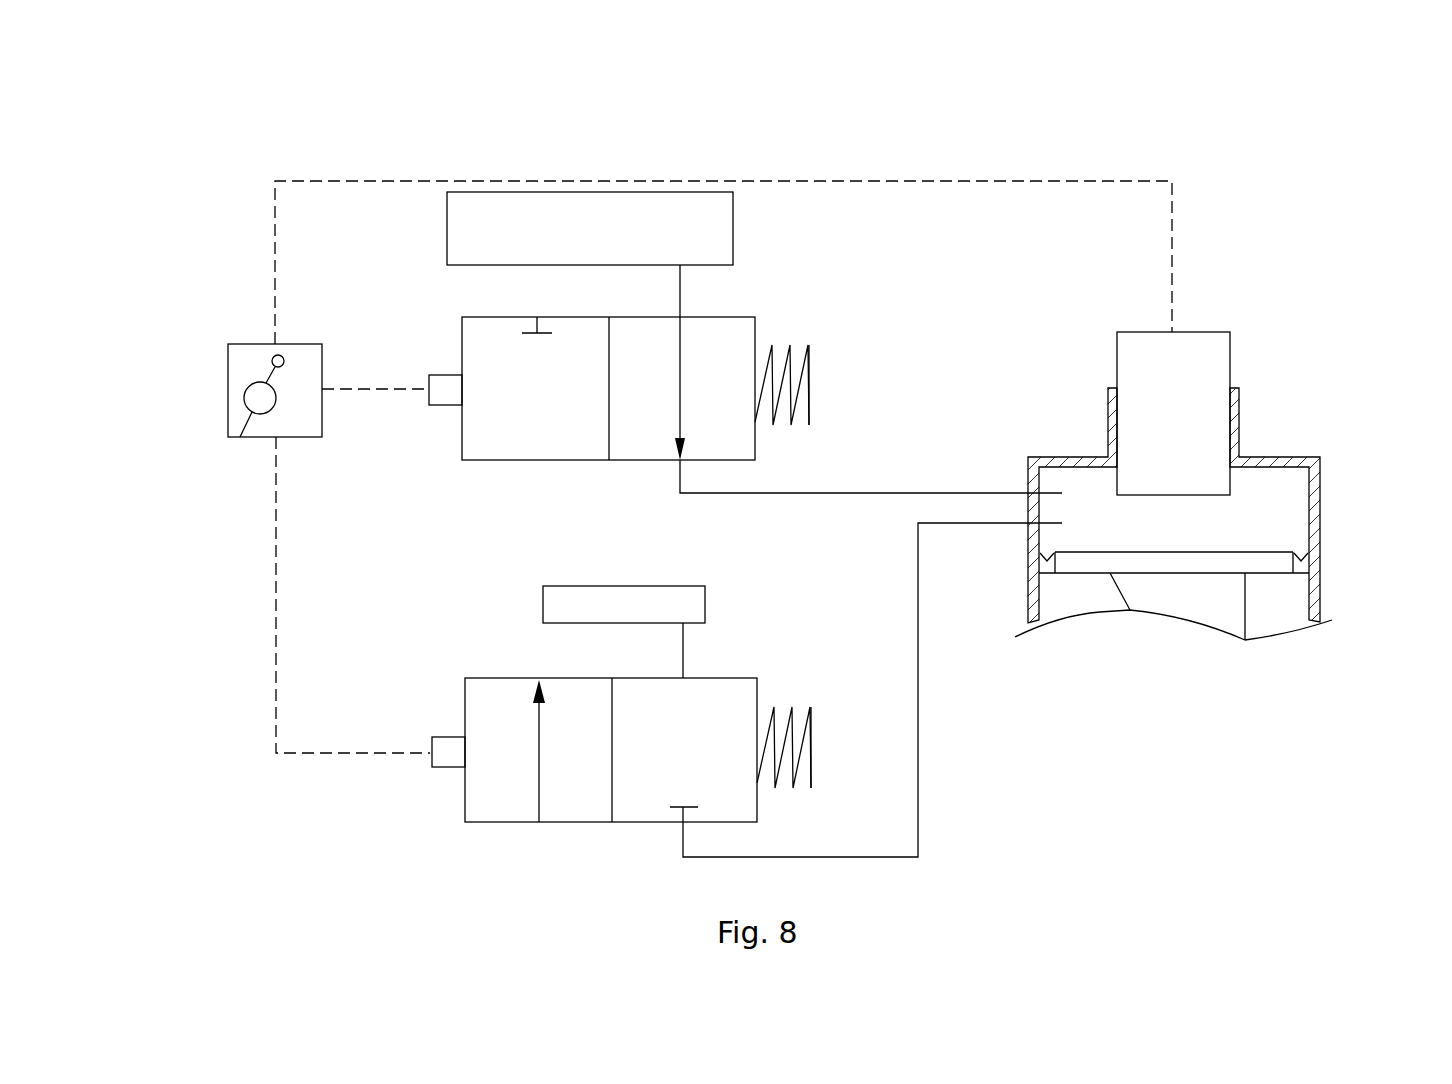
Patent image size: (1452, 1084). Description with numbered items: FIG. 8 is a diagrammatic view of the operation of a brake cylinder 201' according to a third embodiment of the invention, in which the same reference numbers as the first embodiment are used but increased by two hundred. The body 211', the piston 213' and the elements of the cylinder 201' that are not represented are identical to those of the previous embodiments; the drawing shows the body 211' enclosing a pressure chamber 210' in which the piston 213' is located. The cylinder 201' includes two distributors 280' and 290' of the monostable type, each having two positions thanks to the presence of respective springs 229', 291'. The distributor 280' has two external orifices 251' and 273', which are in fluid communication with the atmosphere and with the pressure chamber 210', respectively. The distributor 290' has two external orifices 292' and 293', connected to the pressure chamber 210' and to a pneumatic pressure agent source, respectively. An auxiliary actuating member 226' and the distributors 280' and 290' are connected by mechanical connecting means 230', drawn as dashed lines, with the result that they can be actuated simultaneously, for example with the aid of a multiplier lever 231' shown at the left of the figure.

The cylinder 201' is at (796, 473).
The mechanical connecting means 230' is at (676, 467).
The multiplier lever 231' is at (237, 390).
The distributor 290' is at (706, 353).
The spring 291' is at (800, 354).
The external orifice 292' is at (822, 487).
The external orifice 293' is at (726, 362).
The distributor 280' is at (707, 704).
The spring 229' is at (809, 718).
The external orifice 251' is at (731, 650).
The external orifice 273' is at (836, 704).
The auxiliary actuating member 226' is at (1194, 382).
The pressure chamber 210' is at (1173, 574).
The body 211' is at (1130, 505).
The piston 213' is at (1174, 532).